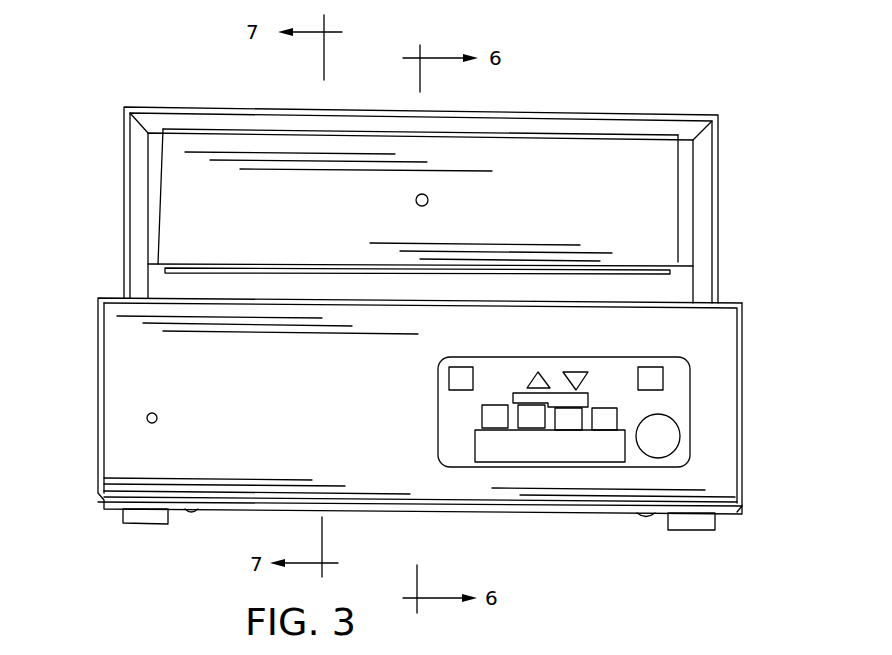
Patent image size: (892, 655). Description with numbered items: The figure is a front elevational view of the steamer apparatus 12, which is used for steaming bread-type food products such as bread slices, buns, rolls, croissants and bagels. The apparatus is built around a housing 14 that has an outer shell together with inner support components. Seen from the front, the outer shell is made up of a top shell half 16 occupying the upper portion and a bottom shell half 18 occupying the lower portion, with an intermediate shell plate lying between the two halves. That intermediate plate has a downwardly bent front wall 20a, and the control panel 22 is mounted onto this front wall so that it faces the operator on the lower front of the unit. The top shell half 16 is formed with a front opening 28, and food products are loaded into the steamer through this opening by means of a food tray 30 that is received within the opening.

The steamer apparatus 12 is at (735, 176).
The housing 14 is at (746, 296).
The top shell half 16 is at (138, 170).
The bottom shell half 18 is at (125, 340).
The front wall 20a is at (266, 400).
The control panel 22 is at (675, 405).
The front opening 28 is at (678, 190).
The food tray 30 is at (233, 140).